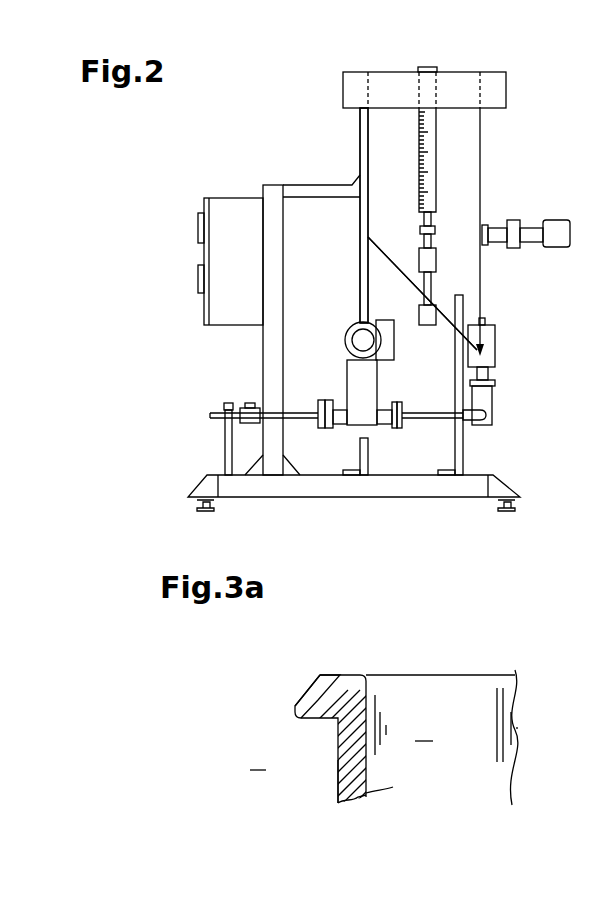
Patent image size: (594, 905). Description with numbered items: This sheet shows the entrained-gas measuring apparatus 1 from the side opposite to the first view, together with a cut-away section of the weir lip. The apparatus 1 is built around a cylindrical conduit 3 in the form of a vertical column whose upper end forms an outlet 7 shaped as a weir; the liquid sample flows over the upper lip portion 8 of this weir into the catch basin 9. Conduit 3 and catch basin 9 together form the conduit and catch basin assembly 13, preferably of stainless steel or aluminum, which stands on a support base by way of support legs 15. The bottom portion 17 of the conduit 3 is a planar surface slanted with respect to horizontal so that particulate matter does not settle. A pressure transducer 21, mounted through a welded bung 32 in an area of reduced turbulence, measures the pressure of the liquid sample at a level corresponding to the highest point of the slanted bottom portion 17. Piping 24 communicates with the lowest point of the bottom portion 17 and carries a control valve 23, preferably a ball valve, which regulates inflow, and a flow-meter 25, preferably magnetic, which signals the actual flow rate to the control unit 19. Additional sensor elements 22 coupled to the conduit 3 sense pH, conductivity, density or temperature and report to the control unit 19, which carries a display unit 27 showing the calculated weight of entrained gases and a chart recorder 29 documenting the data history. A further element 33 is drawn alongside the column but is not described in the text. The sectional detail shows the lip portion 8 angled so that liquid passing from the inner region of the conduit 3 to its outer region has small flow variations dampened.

In FIG. 2, the apparatus 1 is at (178, 463).
In FIG. 2, the cylindrical conduit 3 is at (475, 152).
In FIG. 3A, the cylindrical conduit 3 is at (345, 784).
In FIG. 2, the outlet 7 is at (480, 72).
In FIG. 3A, the outlet 7 is at (370, 652).
In FIG. 3A, the lip portion 8 is at (300, 690).
In FIG. 2, the catch basin 9 is at (497, 90).
In FIG. 2, the conduit and catch basin assembly 13 is at (328, 68).
In FIG. 2, the support legs 15 is at (463, 447).
In FIG. 2, the bottom portion 17 is at (405, 277).
In FIG. 2, the control unit 19 is at (223, 260).
In FIG. 2, the pressure transducer 21 is at (512, 235).
In FIG. 2, the sensor elements 22 is at (553, 238).
In FIG. 2, the control valve 23 is at (495, 338).
In FIG. 2, the piping 24 is at (420, 418).
In FIG. 2, the flow-meter 25 is at (353, 340).
In FIG. 2, the display unit 27 is at (198, 227).
In FIG. 2, the chart recorder 29 is at (198, 282).
In FIG. 2, the welded bung 32 is at (483, 222).
In FIG. 2, the guide rod 33 is at (368, 140).